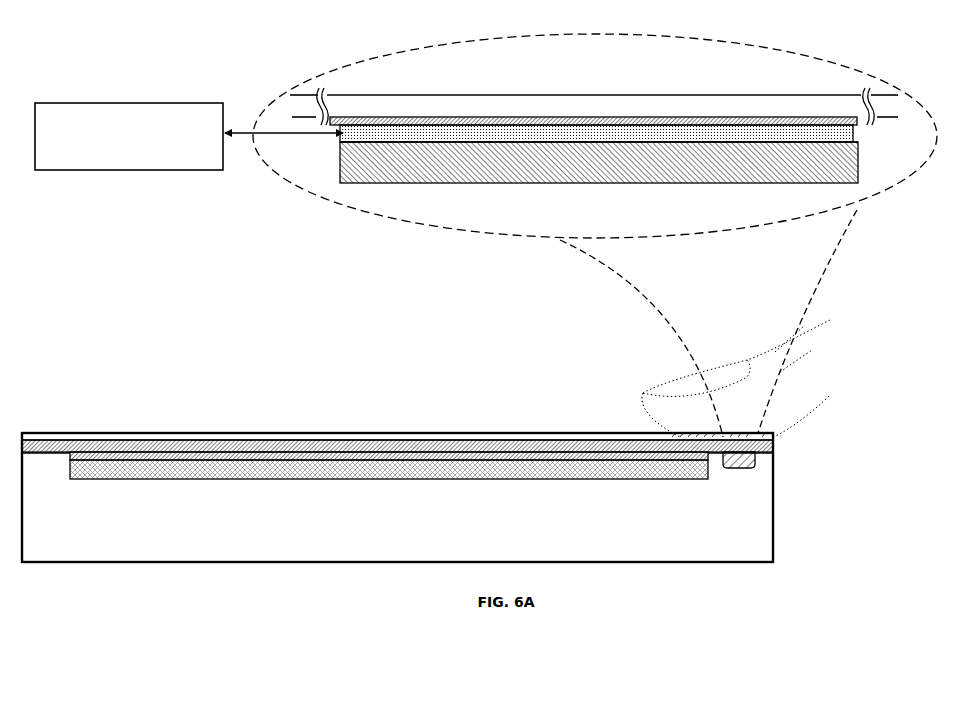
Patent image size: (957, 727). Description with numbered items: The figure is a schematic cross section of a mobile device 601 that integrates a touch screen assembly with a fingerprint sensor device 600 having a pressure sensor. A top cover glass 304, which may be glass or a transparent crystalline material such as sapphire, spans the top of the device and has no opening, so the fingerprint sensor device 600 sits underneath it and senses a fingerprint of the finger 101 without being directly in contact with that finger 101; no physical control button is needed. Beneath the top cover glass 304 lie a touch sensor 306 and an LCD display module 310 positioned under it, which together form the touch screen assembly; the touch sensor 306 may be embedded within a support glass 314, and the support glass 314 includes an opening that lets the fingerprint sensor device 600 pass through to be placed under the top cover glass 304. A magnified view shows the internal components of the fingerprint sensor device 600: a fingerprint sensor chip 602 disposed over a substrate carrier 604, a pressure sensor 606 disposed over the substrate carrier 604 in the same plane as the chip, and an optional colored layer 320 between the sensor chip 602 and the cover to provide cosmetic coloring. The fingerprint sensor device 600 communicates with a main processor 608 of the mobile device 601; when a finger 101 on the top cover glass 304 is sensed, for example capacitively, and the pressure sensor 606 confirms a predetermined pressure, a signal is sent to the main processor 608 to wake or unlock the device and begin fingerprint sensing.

The fingerprint sensor device 600 is at (412, 53).
The mobile device 601 is at (192, 307).
The fingerprint sensor chip 602 is at (358, 133).
The substrate carrier 604 is at (601, 178).
The pressure sensor 606 is at (733, 135).
The main processor 608 is at (153, 168).
The top cover glass 304 is at (520, 108).
The touch sensor 306 is at (438, 447).
The LCD display module 310 is at (332, 468).
The support glass 314 is at (53, 454).
The colored layer 320 is at (862, 125).
The finger 101 is at (703, 382).